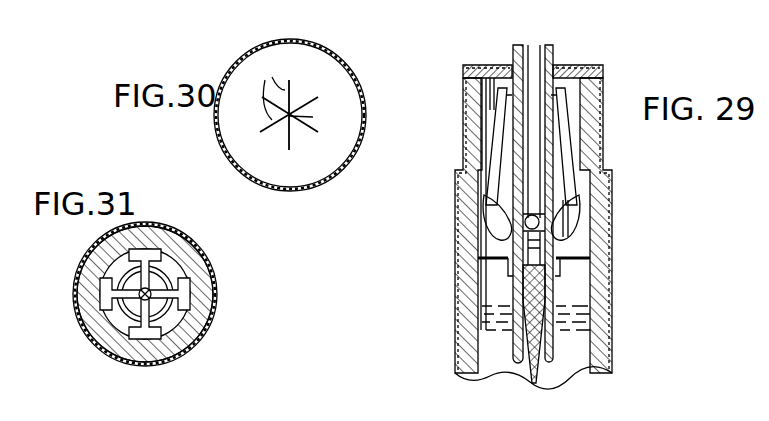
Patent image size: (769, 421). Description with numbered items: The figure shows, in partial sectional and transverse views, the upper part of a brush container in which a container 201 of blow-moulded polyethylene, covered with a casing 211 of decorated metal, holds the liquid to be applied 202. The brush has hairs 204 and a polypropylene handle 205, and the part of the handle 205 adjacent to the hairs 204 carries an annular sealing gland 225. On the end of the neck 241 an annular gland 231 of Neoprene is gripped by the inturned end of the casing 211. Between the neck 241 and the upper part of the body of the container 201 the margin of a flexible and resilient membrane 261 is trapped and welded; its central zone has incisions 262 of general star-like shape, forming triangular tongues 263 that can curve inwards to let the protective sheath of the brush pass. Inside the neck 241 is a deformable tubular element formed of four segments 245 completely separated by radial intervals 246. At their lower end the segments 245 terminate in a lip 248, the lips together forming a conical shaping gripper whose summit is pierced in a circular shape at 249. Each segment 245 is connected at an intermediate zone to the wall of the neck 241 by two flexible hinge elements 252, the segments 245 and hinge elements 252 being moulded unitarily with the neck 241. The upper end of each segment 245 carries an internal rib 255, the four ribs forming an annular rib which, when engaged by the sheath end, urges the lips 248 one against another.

In FIG. 29, the container 201 is at (613, 347).
In FIG. 29, the liquid to be applied 202 is at (537, 378).
In FIG. 29, the hairs 204 is at (517, 295).
In FIG. 29, the handle 205 is at (530, 45).
In FIG. 29, the casing 211 is at (460, 347).
In FIG. 30, the casing 211 is at (260, 185).
In FIG. 31, the casing 211 is at (250, 195).
In FIG. 29, the annular sealing gland 225 is at (513, 222).
In FIG. 29, the annular gland 231 is at (487, 65).
In FIG. 29, the neck 241 is at (473, 118).
In FIG. 31, the neck 241 is at (75, 277).
In FIG. 29, the segments 245 is at (572, 165).
In FIG. 31, the segments 245 is at (202, 332).
In FIG. 29, the radial intervals 246 is at (541, 54).
In FIG. 31, the radial intervals 246 is at (146, 290).
In FIG. 29, the lip 248 is at (590, 230).
In FIG. 31, the circular opening 249 is at (143, 327).
In FIG. 29, the flexible hinge elements 252 is at (577, 108).
In FIG. 31, the flexible hinge elements 252 is at (157, 263).
In FIG. 29, the internal rib 255 is at (553, 97).
In FIG. 29, the flexible and resilient membrane 261 is at (470, 248).
In FIG. 30, the flexible and resilient membrane 261 is at (328, 70).
In FIG. 30, the incisions 262 is at (264, 90).
In FIG. 29, the triangular tongues 263 is at (558, 273).
In FIG. 30, the triangular tongues 263 is at (313, 117).